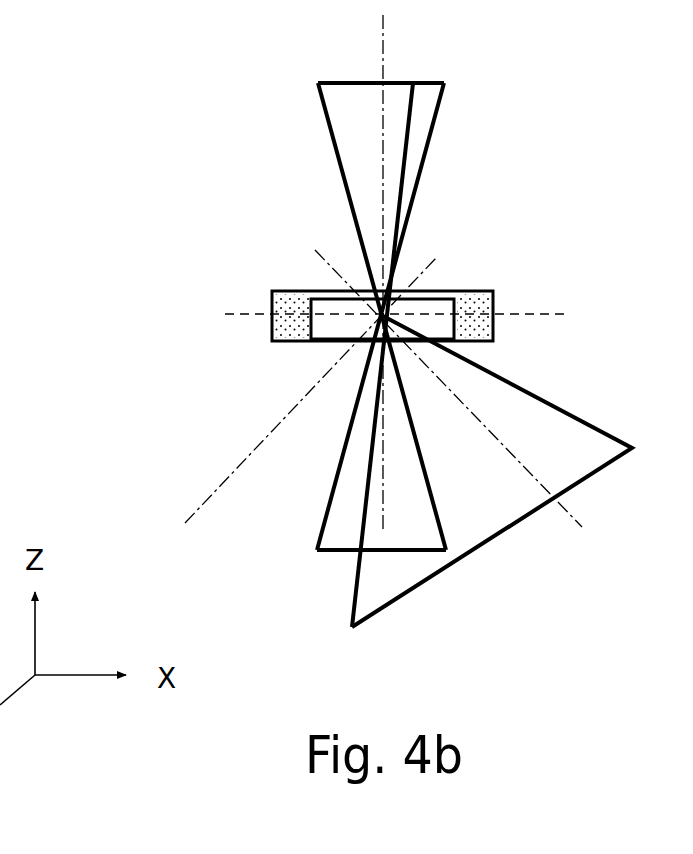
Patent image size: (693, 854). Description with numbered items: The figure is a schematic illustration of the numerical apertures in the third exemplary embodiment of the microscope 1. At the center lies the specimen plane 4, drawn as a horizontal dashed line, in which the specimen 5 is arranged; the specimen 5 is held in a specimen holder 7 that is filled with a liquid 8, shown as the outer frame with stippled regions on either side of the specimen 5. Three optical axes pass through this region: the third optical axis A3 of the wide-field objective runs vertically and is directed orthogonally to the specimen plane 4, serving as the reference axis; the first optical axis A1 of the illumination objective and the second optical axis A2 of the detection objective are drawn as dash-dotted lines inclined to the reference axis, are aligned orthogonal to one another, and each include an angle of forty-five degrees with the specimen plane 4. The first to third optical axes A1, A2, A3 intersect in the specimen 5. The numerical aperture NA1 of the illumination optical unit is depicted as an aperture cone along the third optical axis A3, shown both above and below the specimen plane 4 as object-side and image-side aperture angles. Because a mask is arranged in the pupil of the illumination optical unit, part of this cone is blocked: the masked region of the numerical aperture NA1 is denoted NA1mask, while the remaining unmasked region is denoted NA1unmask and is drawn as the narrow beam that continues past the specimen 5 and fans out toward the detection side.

The microscope 1 is at (260, 80).
The specimen plane 4 is at (527, 310).
The specimen 5 is at (452, 298).
The specimen holder 7 is at (240, 314).
The liquid 8 is at (282, 290).
The first optical axis A1 is at (207, 500).
The second optical axis A2 is at (568, 508).
The third optical axis A3 is at (384, 56).
The numerical aperture of the illumination optical unit NA1 is at (346, 208).
The masked region of the numerical aperture NA1 NA1mask is at (353, 137).
The unmasked region of the numerical aperture NA1 NA1unmask is at (423, 140).